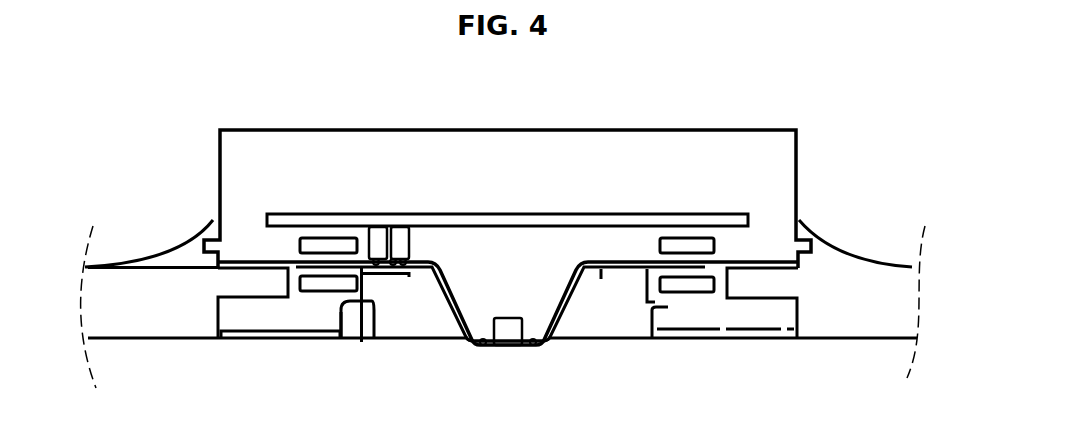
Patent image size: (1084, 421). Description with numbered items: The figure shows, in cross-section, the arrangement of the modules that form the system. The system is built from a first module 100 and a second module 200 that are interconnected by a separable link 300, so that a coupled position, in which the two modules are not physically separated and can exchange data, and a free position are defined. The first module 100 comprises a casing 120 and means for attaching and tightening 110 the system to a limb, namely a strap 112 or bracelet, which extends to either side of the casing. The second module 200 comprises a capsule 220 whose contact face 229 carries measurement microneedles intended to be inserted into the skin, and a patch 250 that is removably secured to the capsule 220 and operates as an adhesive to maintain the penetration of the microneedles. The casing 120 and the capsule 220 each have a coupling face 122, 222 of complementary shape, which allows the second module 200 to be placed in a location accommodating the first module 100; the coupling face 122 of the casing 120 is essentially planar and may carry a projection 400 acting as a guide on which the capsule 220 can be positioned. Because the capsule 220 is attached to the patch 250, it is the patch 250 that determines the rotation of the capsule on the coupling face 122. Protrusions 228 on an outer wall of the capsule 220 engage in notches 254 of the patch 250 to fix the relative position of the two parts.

The first module 100 is at (818, 260).
The means for attaching and tightening 110 is at (897, 316).
The strap 112 is at (567, 279).
The casing 120 is at (524, 190).
The coupling face 122 is at (605, 262).
The second module 200 is at (675, 318).
The capsule 220 is at (403, 313).
The coupling face 222 is at (590, 277).
The protrusions 228 is at (373, 339).
The contact face 229 is at (428, 343).
The patch 250 is at (262, 316).
The notches 254 is at (340, 338).
The separable link 300 is at (322, 283).
The projection 400 is at (523, 286).